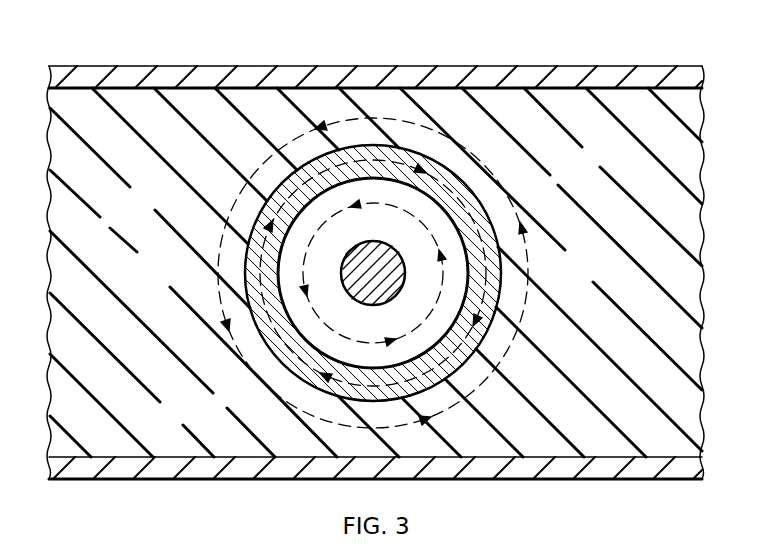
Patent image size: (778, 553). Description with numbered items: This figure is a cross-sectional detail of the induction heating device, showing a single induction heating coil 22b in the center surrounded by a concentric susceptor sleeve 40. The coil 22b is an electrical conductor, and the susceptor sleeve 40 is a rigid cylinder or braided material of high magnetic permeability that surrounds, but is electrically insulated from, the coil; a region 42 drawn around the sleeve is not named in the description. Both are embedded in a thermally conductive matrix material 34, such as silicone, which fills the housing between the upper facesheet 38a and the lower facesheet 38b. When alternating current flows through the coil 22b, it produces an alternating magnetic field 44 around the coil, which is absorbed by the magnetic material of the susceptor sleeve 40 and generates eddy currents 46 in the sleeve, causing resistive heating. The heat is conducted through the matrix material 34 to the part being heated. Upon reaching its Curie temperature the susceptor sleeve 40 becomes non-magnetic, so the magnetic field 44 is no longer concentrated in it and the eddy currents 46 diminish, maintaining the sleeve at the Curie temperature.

The induction heating coil 22b is at (400, 287).
The matrix material 34 is at (632, 438).
The upper facesheet 38a is at (243, 76).
The lower facesheet 38b is at (233, 470).
The susceptor sleeve 40 is at (563, 173).
The outer flow path 42 is at (248, 183).
The alternating magnetic field 44 is at (303, 267).
The eddy currents 46 is at (305, 352).